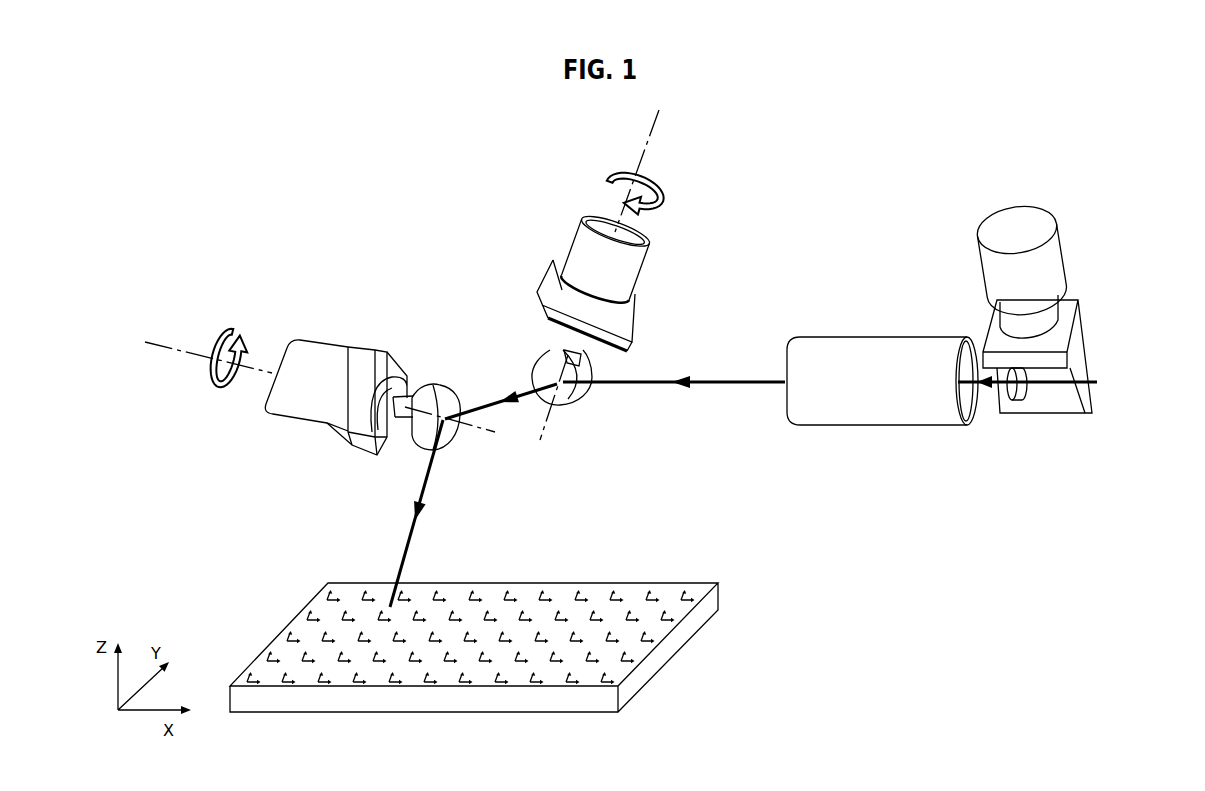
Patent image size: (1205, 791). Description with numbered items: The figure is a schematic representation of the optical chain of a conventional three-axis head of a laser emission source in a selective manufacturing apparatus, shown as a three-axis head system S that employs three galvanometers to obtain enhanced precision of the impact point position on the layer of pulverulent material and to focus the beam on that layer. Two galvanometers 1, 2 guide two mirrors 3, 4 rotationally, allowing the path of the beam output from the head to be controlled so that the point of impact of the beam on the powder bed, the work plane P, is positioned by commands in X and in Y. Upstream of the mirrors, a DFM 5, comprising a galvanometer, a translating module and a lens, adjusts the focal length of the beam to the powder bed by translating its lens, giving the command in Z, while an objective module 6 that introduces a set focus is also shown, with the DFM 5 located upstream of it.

The three-axis head system S is at (337, 178).
The galvanometer 1 is at (350, 324).
The galvanometer 2 is at (656, 287).
The mirror 3 is at (468, 447).
The mirror 4 is at (574, 409).
The DFM (Dynamic Focusing Module) 5 is at (1106, 303).
The objective module 6 is at (891, 317).
The work plane P is at (686, 650).